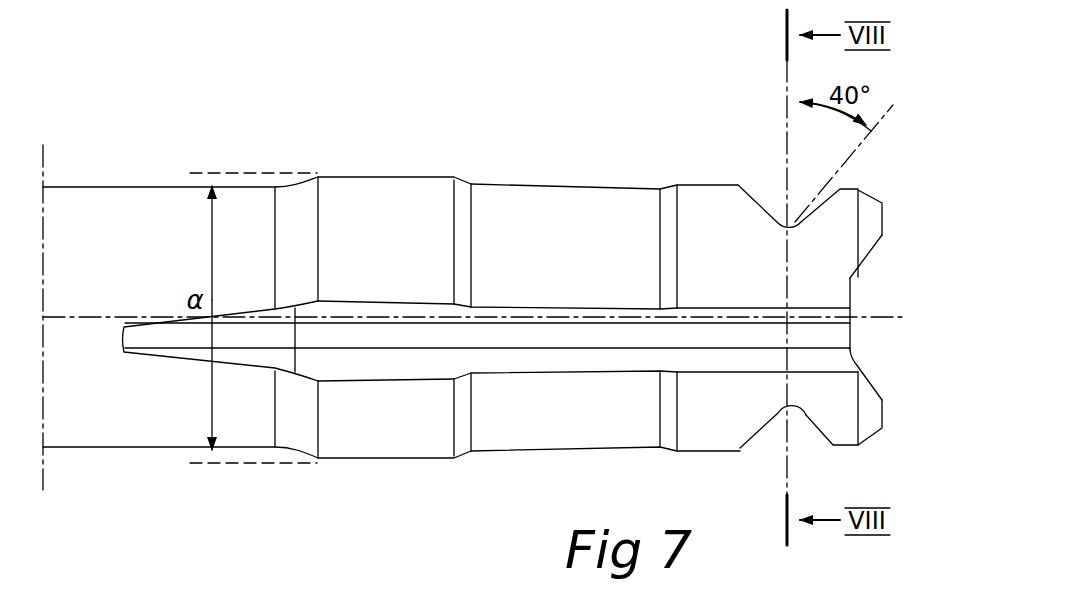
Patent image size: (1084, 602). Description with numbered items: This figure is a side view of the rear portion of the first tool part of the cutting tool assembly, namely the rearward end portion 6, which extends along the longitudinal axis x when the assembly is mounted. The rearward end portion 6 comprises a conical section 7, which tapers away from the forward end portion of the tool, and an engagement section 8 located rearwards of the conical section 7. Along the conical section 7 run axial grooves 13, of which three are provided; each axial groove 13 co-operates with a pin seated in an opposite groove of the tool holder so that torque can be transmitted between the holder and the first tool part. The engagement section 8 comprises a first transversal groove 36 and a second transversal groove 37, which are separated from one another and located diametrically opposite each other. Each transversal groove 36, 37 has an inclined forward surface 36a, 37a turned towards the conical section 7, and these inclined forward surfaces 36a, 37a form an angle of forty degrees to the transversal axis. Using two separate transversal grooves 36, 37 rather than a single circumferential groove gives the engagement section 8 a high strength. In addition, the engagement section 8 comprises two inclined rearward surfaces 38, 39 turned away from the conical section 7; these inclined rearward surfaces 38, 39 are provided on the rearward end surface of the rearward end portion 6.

The rearward end portion 6 is at (360, 118).
The conical section 7 is at (693, 203).
The engagement section 8 is at (843, 240).
The axial groove 13 is at (420, 362).
The first transversal groove 36 is at (770, 192).
The inclined forward surface 36a is at (817, 210).
The second transversal groove 37 is at (773, 437).
The inclined forward surface 37a is at (815, 428).
The inclined rearward surface 38 is at (868, 248).
The inclined rearward surface 39 is at (868, 383).
The longitudinal axis x is at (865, 318).